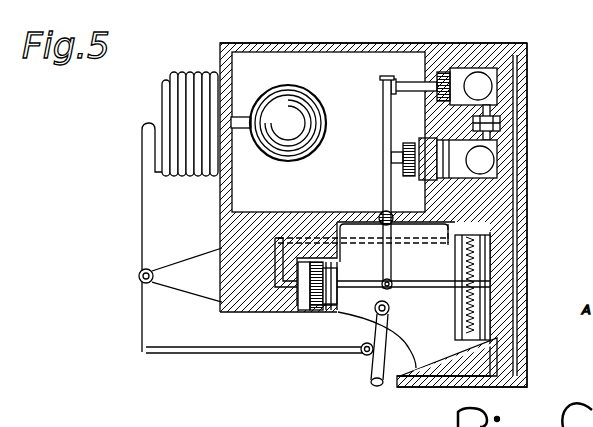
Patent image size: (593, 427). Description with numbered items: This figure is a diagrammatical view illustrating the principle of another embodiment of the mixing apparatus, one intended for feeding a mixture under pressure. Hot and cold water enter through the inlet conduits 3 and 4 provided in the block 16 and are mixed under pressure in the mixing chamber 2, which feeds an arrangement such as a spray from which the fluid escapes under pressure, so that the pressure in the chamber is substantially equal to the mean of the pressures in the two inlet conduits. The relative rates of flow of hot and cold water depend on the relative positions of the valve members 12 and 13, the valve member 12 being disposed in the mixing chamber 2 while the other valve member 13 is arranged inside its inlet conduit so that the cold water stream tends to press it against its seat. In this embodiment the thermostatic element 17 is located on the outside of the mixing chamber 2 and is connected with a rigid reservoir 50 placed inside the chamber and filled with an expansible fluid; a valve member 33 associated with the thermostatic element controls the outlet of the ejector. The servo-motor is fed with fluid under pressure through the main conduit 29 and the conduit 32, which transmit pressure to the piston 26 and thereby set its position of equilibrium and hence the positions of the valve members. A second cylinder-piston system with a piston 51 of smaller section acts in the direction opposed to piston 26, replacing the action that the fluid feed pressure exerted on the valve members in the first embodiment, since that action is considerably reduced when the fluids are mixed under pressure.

The mixing chamber 2 is at (362, 68).
The inlet conduit 3 is at (484, 163).
The inlet conduit 4 is at (481, 60).
The valve member 12 is at (478, 153).
The valve member 13 is at (468, 70).
The block 16 is at (284, 20).
The thermostatic element 17 is at (178, 104).
The piston 26 is at (470, 253).
The main conduit 29 is at (466, 377).
The conduit 32 is at (470, 355).
The valve member 33 is at (370, 379).
The rigid reservoir 50 is at (293, 107).
The piston 51 is at (310, 298).